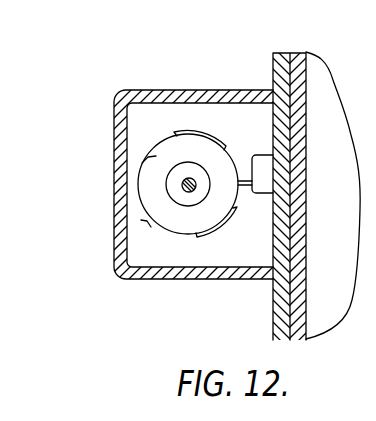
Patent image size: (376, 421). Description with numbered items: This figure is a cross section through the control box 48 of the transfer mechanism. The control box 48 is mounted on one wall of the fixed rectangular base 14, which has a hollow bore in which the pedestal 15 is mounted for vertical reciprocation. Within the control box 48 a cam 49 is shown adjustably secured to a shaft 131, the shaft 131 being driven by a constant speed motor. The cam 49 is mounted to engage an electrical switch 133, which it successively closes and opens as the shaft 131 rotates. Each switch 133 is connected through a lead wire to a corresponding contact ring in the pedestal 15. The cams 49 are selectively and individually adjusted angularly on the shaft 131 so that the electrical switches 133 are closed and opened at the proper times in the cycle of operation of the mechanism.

The base 14 is at (273, 77).
The pedestal 15 is at (318, 93).
The control box 48 is at (197, 279).
The cam 49 is at (172, 215).
The shaft 131 is at (194, 179).
The electrical switch 133 is at (263, 194).